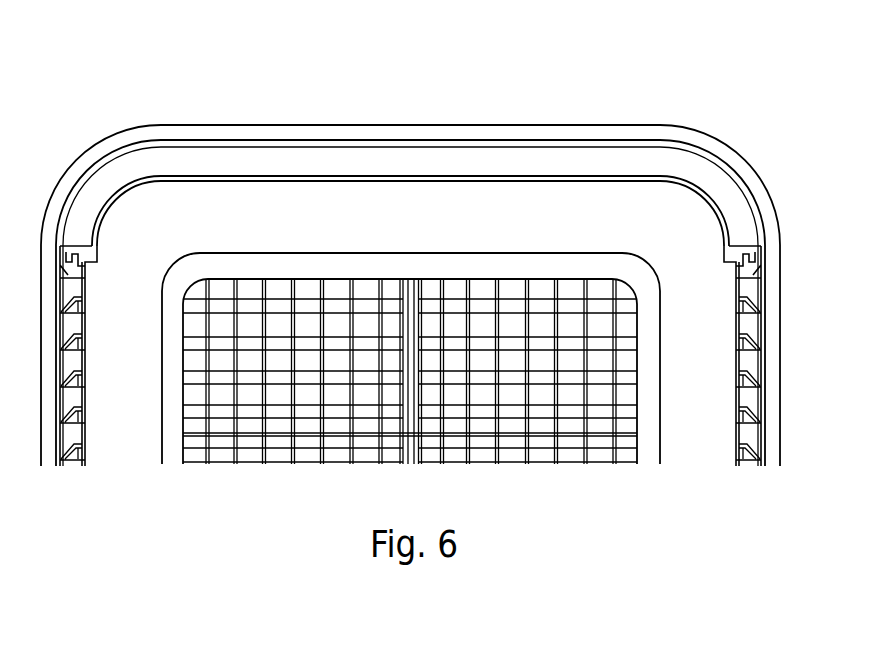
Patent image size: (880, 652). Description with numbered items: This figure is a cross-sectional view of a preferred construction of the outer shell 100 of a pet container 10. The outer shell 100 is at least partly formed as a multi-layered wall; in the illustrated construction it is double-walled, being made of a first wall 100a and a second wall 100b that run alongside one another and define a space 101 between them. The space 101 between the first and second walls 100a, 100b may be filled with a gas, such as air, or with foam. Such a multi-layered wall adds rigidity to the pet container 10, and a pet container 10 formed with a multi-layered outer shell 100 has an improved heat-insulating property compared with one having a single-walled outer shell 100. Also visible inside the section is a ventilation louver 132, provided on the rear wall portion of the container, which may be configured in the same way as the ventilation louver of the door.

The outer shell 100 is at (236, 100).
The first wall 100a is at (598, 145).
The second wall 100b is at (450, 178).
The space 101 is at (352, 160).
The pet container 10 is at (385, 421).
The ventilation louver 132 is at (542, 442).